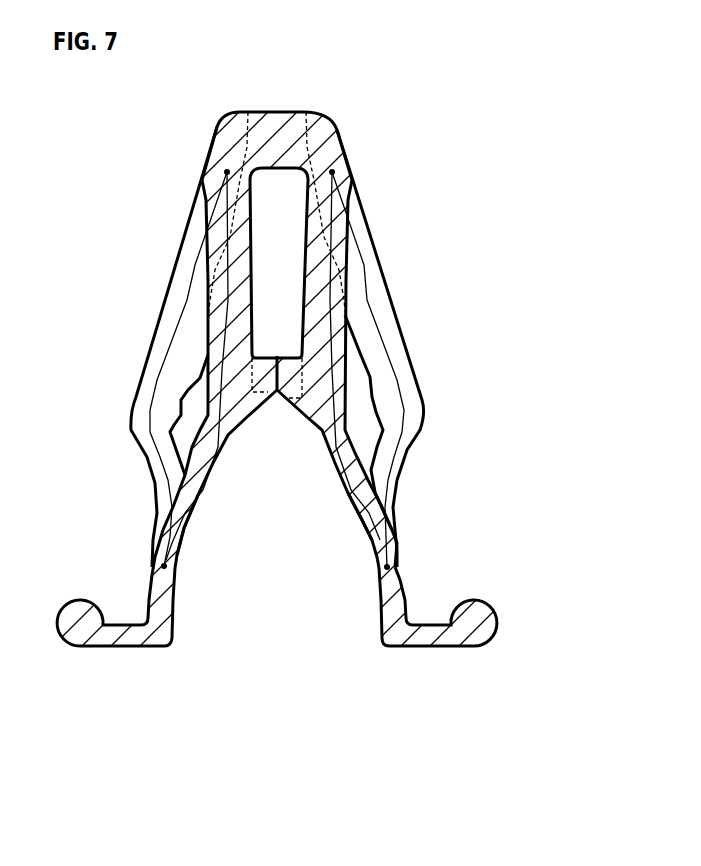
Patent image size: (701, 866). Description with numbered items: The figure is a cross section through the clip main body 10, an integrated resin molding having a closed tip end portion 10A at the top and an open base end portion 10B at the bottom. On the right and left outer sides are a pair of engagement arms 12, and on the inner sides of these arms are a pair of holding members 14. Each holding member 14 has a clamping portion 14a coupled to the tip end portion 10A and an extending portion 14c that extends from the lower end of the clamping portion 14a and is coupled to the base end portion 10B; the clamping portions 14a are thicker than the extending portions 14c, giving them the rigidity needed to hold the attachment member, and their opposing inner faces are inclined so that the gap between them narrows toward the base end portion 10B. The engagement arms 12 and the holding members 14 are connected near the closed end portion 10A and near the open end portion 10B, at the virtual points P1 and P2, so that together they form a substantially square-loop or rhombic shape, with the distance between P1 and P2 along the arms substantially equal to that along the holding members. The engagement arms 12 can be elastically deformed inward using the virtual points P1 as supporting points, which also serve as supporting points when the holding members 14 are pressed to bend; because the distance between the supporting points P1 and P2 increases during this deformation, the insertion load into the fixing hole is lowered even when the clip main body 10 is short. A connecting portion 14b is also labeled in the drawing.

The clip main body 10 is at (141, 198).
The tip end portion 10A is at (294, 99).
The base end portion 10B is at (332, 645).
The engagement arm 12 is at (160, 332).
The holding member 14 is at (206, 372).
The clamping portion 14a is at (212, 287).
The connecting portion of inner arm 14b is at (265, 380).
The extending portion 14c is at (202, 476).
The virtual point P1 is at (227, 172).
The virtual point P2 is at (164, 566).